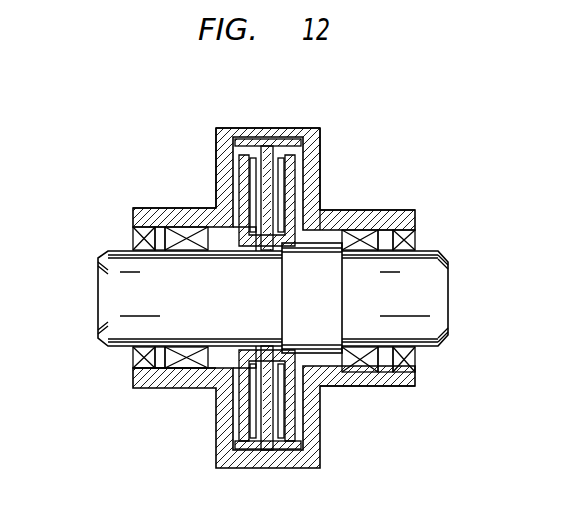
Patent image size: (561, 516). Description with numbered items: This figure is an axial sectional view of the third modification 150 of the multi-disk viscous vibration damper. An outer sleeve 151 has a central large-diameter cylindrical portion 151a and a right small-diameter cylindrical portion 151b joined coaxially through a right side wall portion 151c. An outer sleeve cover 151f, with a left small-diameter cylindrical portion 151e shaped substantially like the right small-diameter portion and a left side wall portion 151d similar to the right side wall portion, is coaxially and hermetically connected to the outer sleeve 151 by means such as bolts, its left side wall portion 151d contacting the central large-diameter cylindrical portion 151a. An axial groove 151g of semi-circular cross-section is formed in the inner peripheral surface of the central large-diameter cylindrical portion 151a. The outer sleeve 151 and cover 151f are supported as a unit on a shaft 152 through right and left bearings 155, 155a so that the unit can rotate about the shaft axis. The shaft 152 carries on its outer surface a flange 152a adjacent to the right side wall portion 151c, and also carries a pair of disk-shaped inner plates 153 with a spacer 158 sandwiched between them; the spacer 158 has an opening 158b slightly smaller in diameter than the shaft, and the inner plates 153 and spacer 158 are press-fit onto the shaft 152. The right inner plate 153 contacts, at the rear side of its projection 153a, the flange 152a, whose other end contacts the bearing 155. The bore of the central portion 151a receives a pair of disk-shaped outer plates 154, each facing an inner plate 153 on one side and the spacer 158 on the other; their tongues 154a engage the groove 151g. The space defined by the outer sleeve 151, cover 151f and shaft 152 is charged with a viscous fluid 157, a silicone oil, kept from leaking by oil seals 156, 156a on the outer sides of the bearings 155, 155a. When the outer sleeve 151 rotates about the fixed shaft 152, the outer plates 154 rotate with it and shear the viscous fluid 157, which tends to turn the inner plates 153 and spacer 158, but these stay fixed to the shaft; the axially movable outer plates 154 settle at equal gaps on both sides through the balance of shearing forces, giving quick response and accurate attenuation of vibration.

The third modification of the multi-disk viscous vibration damper 150 is at (447, 124).
The outer sleeve 151 is at (318, 140).
The central large-diameter cylindrical portion 151a is at (262, 130).
The right small-diameter cylindrical portion 151b is at (380, 217).
The right side wall portion 151c is at (316, 178).
The left side wall portion 151d is at (219, 148).
The left small-diameter cylindrical portion 151e is at (162, 212).
The outer sleeve cover 151f is at (251, 188).
The axial groove 151g is at (295, 132).
The shaft 152 is at (433, 268).
The flange 152a is at (330, 322).
The inner plates 153 is at (243, 172).
The projection 153a is at (256, 256).
The outer plates 154 is at (249, 454).
The tongues 154a is at (274, 142).
The right bearing 155 is at (357, 364).
The left bearing 155a is at (180, 366).
The oil seal 156 is at (414, 365).
The oil seal 156a is at (136, 357).
The viscous fluid 157 is at (332, 228).
The spacer 158 is at (264, 454).
The opening 158b is at (260, 346).